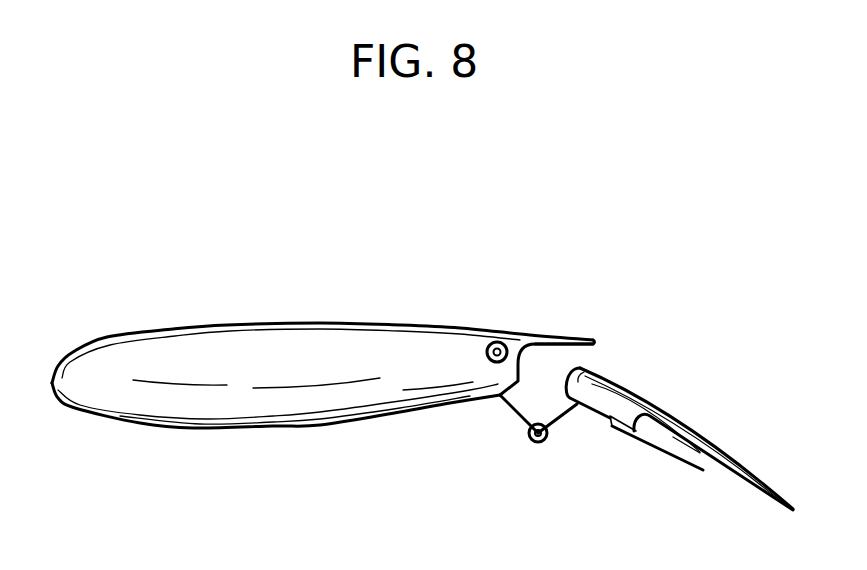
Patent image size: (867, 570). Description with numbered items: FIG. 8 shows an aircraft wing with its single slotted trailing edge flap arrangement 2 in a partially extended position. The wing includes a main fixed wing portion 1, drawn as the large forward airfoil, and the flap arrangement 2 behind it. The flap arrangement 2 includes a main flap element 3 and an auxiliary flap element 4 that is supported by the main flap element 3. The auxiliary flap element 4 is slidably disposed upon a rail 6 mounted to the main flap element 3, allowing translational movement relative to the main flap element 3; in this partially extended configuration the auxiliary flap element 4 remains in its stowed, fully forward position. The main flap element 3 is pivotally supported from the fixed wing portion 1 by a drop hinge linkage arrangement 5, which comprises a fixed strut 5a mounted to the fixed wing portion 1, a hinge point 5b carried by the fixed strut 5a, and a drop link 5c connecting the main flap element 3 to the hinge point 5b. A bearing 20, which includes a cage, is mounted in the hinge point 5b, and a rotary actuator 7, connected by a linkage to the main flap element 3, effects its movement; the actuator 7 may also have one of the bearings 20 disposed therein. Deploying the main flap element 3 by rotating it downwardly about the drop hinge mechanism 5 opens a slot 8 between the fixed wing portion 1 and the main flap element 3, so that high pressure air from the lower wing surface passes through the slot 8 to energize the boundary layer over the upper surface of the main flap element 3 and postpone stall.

The main fixed wing portion 1 is at (305, 337).
The trailing edge flap arrangement 2 is at (679, 421).
The main flap element 3 is at (614, 381).
The auxiliary flap element 4 is at (725, 466).
The drop hinge linkage arrangement 5 is at (531, 454).
The fixed strut 5a is at (512, 415).
The hinge point 5b is at (538, 444).
The drop link 5c is at (565, 419).
The rail 6 is at (680, 462).
The rotary actuator 7 is at (492, 342).
The slot 8 is at (557, 365).
The bearing 20 is at (504, 347).